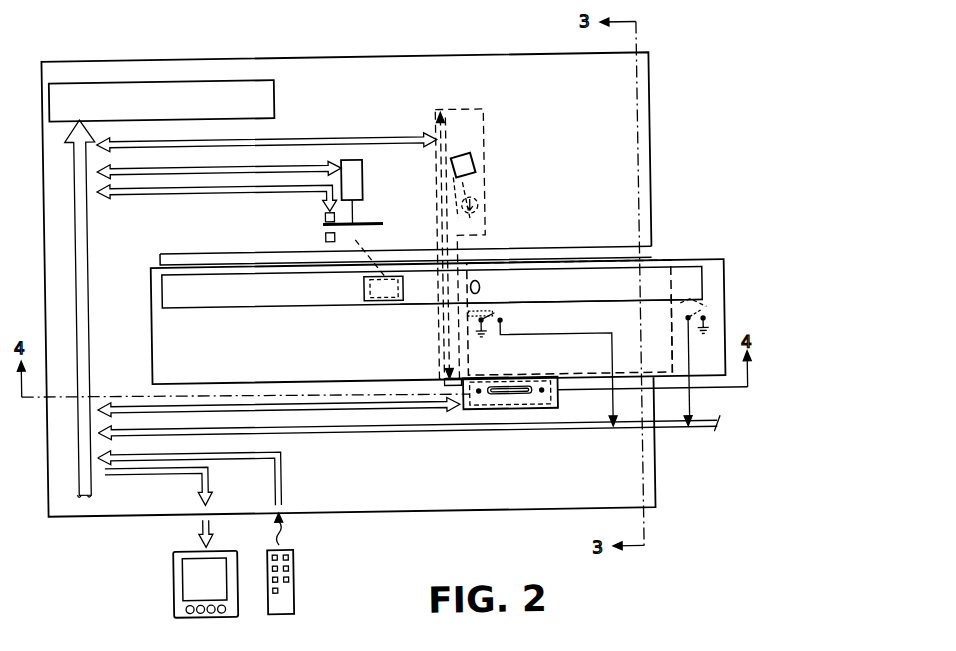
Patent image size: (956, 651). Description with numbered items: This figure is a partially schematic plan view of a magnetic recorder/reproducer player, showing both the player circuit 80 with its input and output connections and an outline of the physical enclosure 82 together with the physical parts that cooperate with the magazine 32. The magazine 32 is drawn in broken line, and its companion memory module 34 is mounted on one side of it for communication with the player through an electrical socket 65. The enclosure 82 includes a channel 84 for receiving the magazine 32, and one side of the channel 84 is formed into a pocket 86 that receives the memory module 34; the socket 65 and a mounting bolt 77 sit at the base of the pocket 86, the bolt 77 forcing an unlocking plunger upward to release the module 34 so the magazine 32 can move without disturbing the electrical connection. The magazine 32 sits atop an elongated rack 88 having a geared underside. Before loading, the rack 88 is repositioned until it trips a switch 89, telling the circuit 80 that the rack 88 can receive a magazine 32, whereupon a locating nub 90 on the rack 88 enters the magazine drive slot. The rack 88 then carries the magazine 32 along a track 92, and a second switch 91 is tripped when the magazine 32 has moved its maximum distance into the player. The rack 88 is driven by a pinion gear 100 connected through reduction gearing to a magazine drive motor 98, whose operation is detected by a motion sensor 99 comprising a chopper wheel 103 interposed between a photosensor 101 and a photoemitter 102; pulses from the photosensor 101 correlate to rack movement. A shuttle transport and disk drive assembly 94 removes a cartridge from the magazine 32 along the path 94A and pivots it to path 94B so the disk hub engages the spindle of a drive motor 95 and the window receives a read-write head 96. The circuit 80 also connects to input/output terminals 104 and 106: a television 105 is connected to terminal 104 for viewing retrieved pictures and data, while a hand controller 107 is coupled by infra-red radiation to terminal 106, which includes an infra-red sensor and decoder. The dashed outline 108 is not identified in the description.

The magazine 32 is at (668, 332).
The memory module 34 is at (539, 415).
The electrical socket 65 is at (519, 403).
The mounting bolt 77 is at (477, 398).
The player circuit 80 is at (277, 98).
The enclosure 82 is at (652, 163).
The channel 84 is at (224, 380).
The pocket 86 is at (558, 398).
The rack 88 is at (585, 303).
The switch 89 is at (703, 311).
The locating nub 90 is at (481, 286).
The switch 91 is at (497, 318).
The track 92 is at (248, 307).
The shuttle transport and disk drive assembly 94 is at (492, 108).
The path 94A is at (445, 338).
The path 94B is at (488, 183).
The drive motor 95 is at (470, 156).
The read-write head 96 is at (492, 203).
The magazine drive motor 98 is at (365, 170).
The motion sensor 99 is at (374, 210).
The pinion gear 100 is at (400, 301).
The photosensor 101 is at (326, 213).
The photoemitter 102 is at (326, 236).
The chopper wheel 103 is at (370, 227).
The input/output terminal 104 is at (211, 506).
The television 105 is at (169, 579).
The input/output terminal 106 is at (280, 512).
The hand controller 107 is at (291, 587).
The cassette outline 108 is at (578, 251).